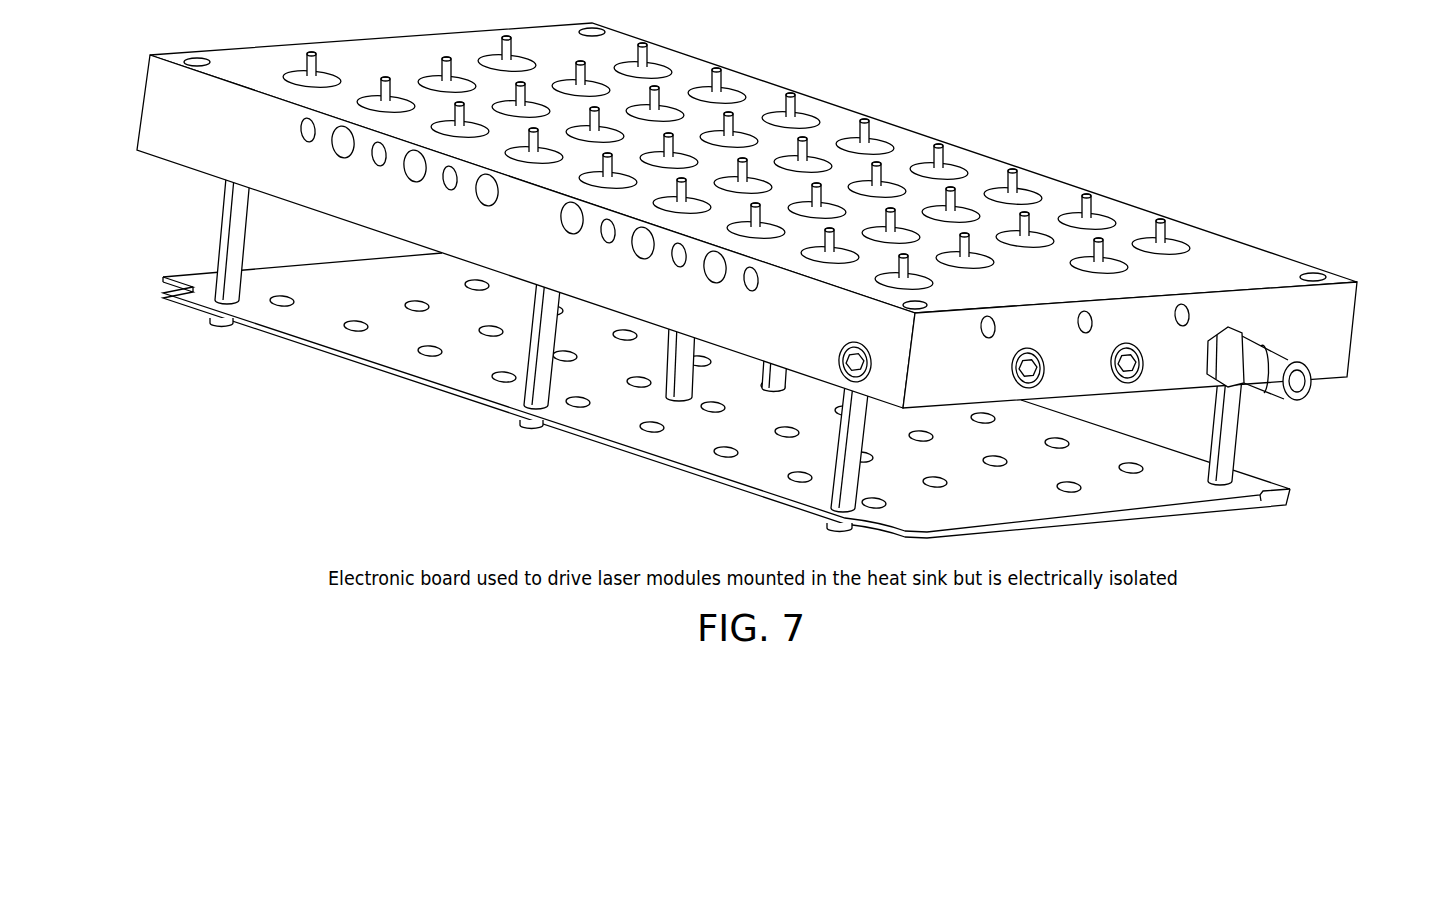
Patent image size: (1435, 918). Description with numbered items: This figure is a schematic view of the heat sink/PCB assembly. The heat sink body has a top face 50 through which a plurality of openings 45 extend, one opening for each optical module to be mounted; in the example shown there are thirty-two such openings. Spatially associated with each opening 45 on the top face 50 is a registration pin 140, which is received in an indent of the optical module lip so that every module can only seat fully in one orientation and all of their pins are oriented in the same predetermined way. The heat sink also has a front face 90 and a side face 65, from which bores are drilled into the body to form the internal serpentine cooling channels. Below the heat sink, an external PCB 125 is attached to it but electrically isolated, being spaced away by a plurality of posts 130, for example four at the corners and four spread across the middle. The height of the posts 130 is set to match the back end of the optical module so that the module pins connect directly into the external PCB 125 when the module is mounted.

The openings 45 is at (950, 172).
The top face 50 is at (747, 215).
The side face 65 is at (1322, 335).
The front face 90 is at (203, 127).
The external PCB 125 is at (1237, 519).
The posts 130 is at (218, 228).
The registration pin 140 is at (736, 160).